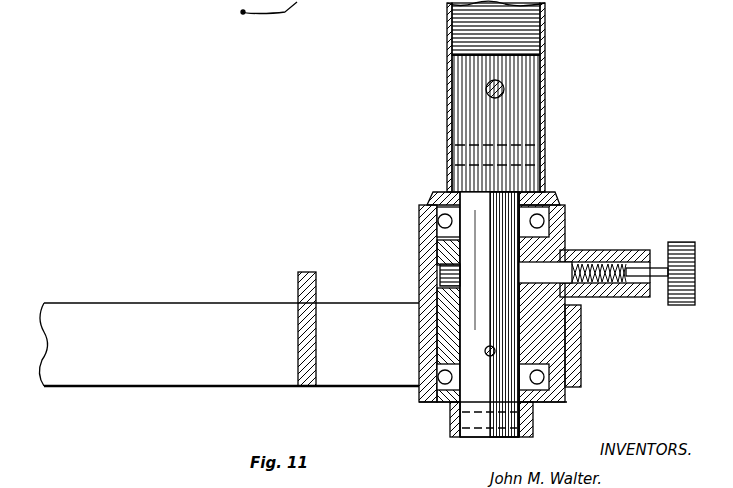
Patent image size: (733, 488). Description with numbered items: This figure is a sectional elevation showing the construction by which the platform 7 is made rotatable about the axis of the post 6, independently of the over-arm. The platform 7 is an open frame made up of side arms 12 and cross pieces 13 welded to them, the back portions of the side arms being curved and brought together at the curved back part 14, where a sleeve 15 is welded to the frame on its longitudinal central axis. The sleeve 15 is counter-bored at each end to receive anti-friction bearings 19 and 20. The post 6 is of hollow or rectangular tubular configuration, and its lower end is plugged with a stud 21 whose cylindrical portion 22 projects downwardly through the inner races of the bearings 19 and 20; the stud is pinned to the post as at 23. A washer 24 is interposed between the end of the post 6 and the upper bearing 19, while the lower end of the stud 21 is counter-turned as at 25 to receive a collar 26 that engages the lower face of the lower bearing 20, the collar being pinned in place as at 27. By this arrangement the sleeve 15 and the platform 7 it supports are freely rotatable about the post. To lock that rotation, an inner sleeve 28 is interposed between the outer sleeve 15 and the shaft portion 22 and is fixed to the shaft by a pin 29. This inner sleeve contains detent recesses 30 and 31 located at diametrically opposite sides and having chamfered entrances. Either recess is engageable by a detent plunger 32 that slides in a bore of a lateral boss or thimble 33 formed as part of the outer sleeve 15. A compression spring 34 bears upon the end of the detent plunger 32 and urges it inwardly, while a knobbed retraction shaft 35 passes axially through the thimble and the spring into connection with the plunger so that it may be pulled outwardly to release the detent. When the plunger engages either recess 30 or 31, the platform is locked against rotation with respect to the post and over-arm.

The post 6 is at (548, 5).
The platform 7 is at (166, 371).
The side arms 12 is at (124, 318).
The cross pieces 13 is at (302, 290).
The curved back part 14 is at (494, 303).
The sleeve 15 is at (428, 322).
The upper anti-friction bearing 19 is at (438, 222).
The lower anti-friction bearing 20 is at (567, 400).
The stud 21 is at (524, 102).
The cylindrical portion 22 is at (478, 297).
The pin 23 is at (505, 84).
The washer 24 is at (548, 194).
The counter-turned portion 25 is at (533, 430).
The collar 26 is at (452, 432).
The pin 27 is at (452, 418).
The inner sleeve 28 is at (582, 334).
The pin 29 is at (487, 354).
The detent recess 30 is at (440, 272).
The detent recess 31 is at (560, 268).
The detent plunger 32 is at (570, 263).
The lateral boss or thimble 33 is at (640, 250).
The compression spring 34 is at (617, 297).
The knobbed retraction shaft 35 is at (658, 267).